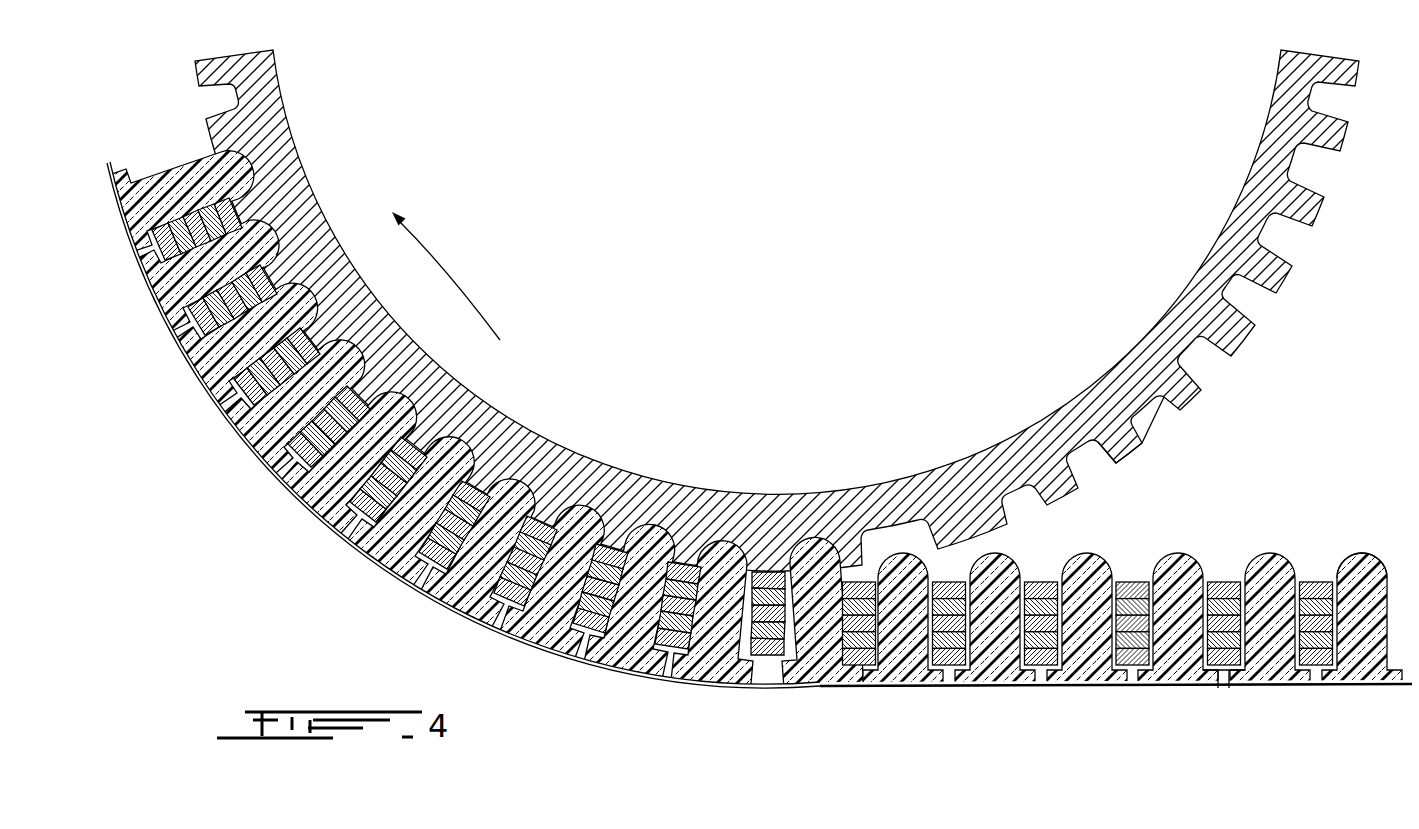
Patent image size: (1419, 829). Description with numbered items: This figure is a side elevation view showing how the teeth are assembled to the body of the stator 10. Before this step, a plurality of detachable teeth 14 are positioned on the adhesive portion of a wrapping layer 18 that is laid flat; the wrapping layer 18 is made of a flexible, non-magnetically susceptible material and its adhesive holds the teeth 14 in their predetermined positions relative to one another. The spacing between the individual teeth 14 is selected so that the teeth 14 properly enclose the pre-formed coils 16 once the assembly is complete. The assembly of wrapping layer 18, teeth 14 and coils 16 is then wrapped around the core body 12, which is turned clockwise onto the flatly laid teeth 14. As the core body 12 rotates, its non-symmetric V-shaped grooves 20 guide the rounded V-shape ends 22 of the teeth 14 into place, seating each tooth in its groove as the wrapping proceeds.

The stator 10 is at (298, 592).
The core body 12 is at (1093, 402).
The detachable teeth 14 is at (1183, 683).
The pre-formed coils 16 is at (1223, 580).
The wrapping layer 18 is at (1220, 683).
The non-symmetric V-shaped grooves 20 is at (933, 532).
The rounded V-shape ends 22 is at (1365, 553).